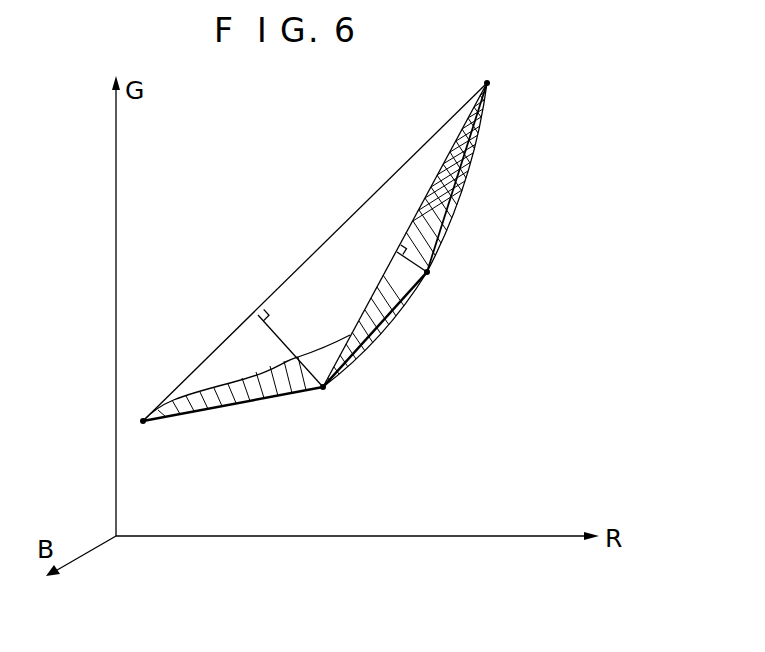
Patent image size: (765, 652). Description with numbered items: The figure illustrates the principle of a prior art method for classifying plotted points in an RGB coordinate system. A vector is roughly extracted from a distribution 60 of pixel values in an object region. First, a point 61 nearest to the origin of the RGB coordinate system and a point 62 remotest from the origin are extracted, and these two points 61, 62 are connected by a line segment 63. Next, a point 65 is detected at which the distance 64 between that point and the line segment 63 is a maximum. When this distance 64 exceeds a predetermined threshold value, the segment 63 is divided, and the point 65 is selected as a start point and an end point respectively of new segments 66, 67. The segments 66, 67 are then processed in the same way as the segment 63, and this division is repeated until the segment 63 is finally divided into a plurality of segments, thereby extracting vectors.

The distribution of pixel values 60 is at (443, 190).
The point nearest to the origin 61 is at (143, 425).
The point remotest from the origin 62 is at (493, 80).
The line segment 63 is at (310, 262).
The distance 64 is at (281, 336).
The point of maximum distance 65 is at (329, 390).
The new segment 66 is at (402, 236).
The new segment 67 is at (253, 404).